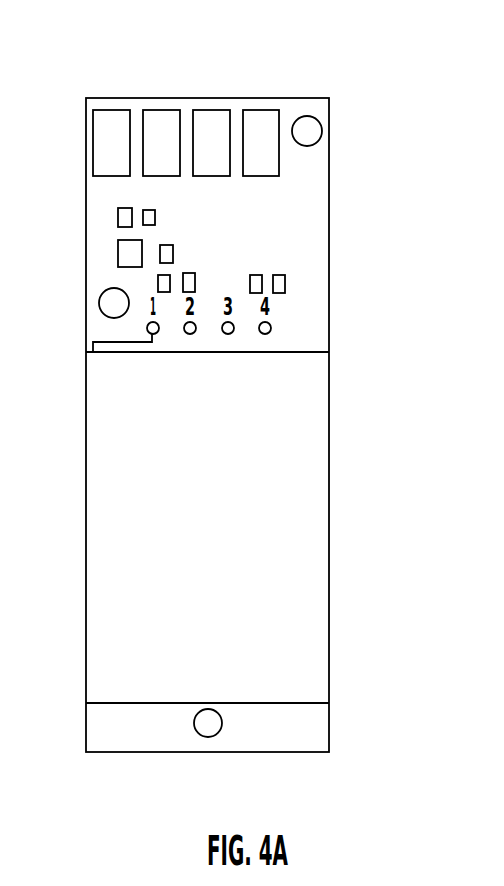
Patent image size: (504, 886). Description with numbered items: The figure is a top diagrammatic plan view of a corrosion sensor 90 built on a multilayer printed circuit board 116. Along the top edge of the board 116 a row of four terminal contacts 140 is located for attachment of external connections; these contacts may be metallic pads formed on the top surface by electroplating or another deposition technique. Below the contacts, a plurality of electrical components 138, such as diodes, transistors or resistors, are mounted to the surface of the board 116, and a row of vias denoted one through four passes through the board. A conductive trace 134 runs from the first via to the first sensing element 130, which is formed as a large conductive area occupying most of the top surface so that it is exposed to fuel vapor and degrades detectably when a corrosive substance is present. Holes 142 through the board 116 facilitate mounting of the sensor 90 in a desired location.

The corrosion sensor 90 is at (357, 183).
The multilayer printed circuit board 116 is at (315, 237).
The first sensing element 130 is at (320, 423).
The conductive trace 134 is at (93, 343).
The electrical components 138 is at (117, 249).
The terminal contacts 140 is at (262, 110).
The holes 142 is at (321, 124).